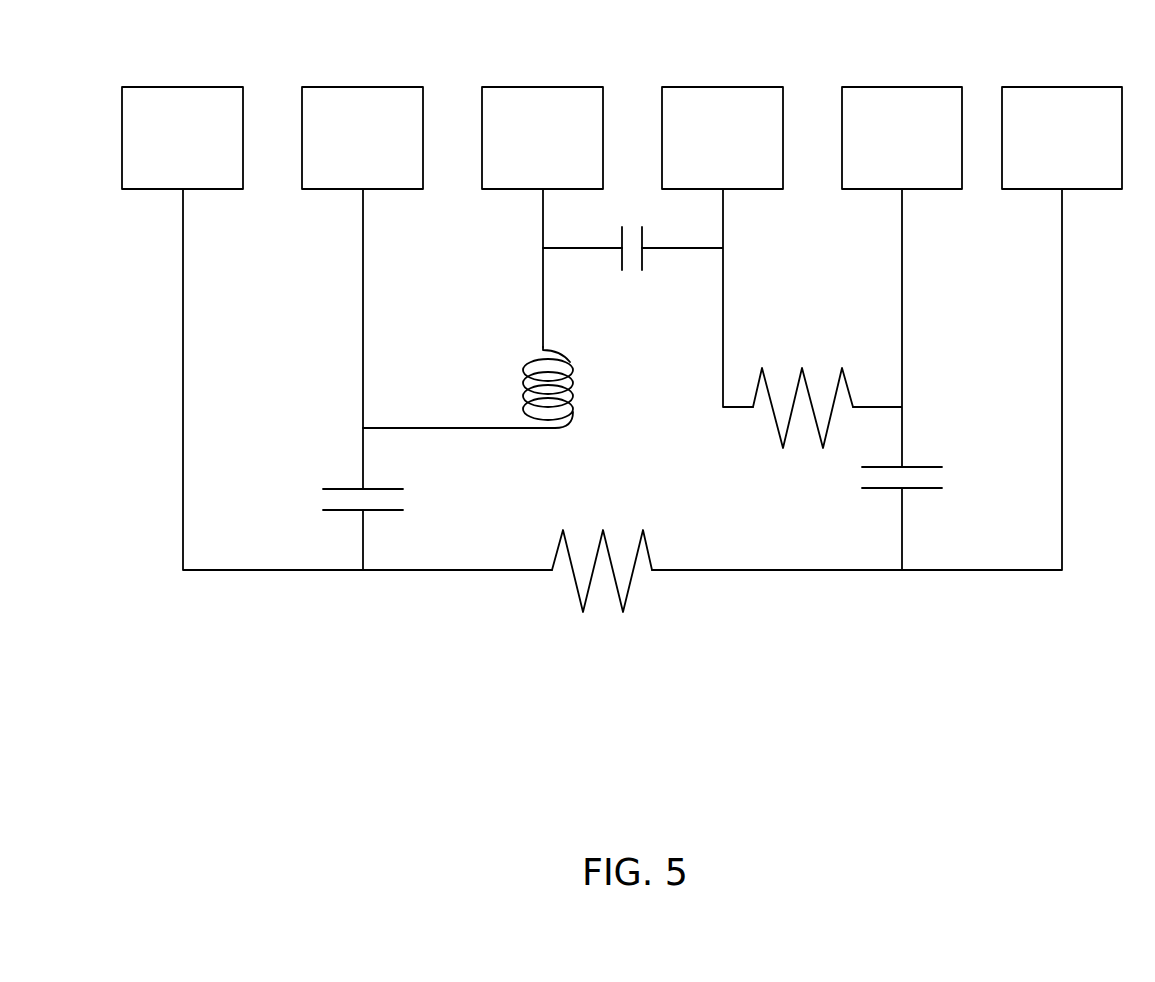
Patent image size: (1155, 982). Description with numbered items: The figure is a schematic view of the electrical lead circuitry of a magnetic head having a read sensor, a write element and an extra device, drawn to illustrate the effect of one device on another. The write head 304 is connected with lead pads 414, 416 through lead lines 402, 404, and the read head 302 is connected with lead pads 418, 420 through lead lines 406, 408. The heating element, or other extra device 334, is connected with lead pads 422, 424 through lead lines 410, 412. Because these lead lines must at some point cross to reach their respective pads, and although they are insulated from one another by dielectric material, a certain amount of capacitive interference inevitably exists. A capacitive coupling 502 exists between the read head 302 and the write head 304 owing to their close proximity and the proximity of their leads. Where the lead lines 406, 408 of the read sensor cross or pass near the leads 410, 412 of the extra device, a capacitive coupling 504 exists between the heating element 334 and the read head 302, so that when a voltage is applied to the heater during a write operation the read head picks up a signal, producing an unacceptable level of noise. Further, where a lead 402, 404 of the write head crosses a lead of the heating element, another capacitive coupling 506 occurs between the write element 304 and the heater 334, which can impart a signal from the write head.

The lead pad 422 is at (218, 87).
The lead pad 414 is at (412, 87).
The lead pad 416 is at (584, 87).
The lead pad 418 is at (745, 87).
The lead pad 420 is at (936, 87).
The lead pad 424 is at (1097, 87).
The lead line 412 is at (183, 276).
The lead line 404 is at (363, 278).
The lead line 402 is at (543, 282).
The lead line 408 is at (723, 260).
The lead line 406 is at (902, 281).
The lead line 410 is at (1062, 268).
The capacitive coupling 502 is at (643, 258).
The write head 304 is at (573, 381).
The capacitive coupling 506 is at (387, 489).
The read head 302 is at (822, 440).
The capacitive coupling 504 is at (967, 422).
The heating element 334 is at (633, 578).